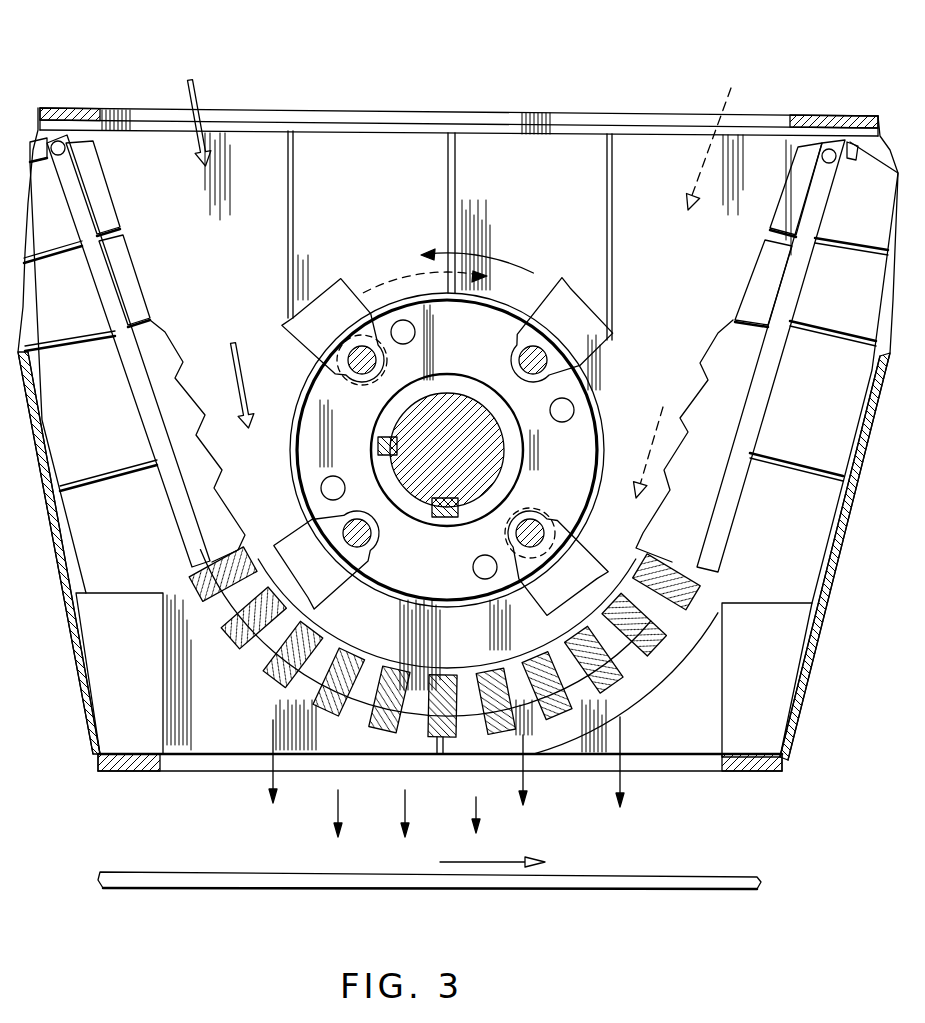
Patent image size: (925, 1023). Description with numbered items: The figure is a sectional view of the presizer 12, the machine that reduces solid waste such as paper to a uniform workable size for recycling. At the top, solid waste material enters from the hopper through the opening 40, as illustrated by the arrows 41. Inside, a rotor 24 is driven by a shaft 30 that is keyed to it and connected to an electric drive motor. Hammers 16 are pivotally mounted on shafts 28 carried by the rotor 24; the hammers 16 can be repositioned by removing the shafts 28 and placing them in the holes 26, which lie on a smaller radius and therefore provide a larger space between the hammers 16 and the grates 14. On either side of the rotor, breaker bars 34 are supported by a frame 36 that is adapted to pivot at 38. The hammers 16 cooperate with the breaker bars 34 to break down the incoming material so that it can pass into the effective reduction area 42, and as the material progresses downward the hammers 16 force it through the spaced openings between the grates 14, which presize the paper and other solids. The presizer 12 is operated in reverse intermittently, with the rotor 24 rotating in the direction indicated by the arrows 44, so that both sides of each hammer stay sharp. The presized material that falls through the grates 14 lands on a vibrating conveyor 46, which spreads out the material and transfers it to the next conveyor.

The presizer 12 is at (98, 108).
The grates 14 is at (292, 620).
The hammers 16 is at (570, 298).
The rotor 24 is at (300, 449).
The holes 26 is at (408, 320).
The shafts 28 is at (360, 346).
The shaft 30 is at (453, 405).
The breaker bars 34 is at (168, 347).
The frame 36 is at (113, 293).
The pivot 38 is at (59, 141).
The opening 40 is at (334, 122).
The arrows 41 is at (197, 98).
The effective reduction area 42 is at (413, 633).
The arrows 44 is at (726, 88).
The vibrating conveyor 46 is at (205, 876).